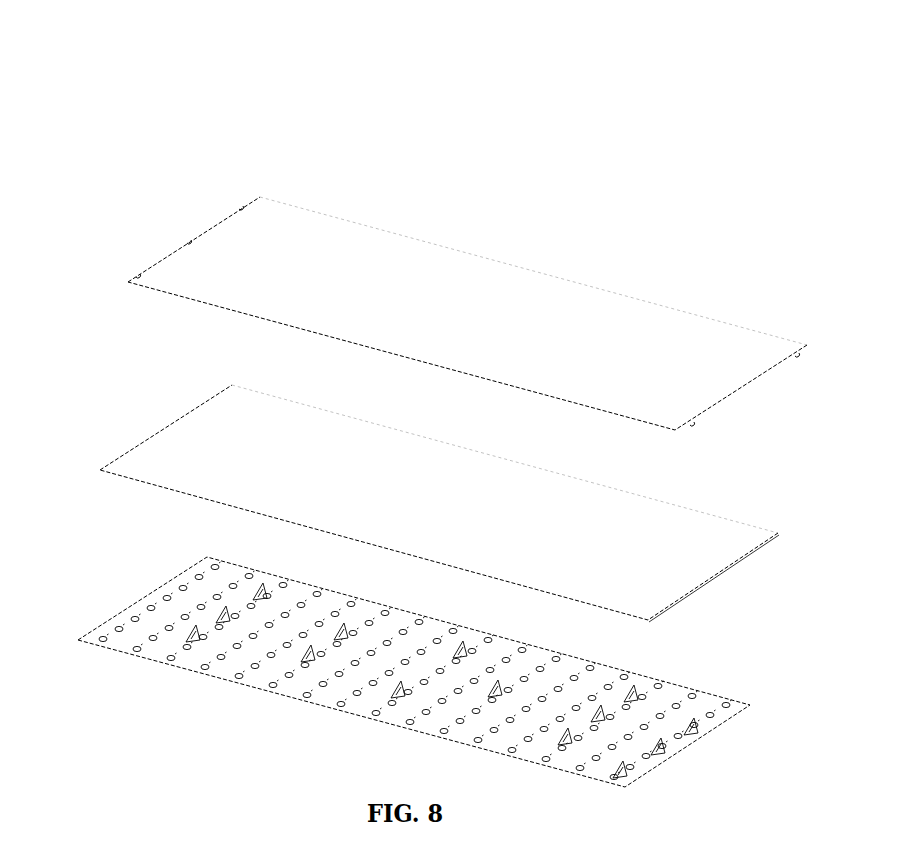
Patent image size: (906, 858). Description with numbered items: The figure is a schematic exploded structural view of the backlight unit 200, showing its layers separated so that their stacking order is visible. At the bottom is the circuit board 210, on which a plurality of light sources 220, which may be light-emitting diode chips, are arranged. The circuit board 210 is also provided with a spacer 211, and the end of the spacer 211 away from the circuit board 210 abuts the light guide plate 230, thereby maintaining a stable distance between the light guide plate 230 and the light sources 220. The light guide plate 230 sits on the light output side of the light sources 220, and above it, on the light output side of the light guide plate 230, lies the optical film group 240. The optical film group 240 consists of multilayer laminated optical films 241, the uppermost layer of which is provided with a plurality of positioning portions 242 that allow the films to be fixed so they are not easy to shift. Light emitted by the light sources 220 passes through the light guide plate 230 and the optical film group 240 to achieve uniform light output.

The backlight unit 200 is at (130, 72).
The circuit board 210 is at (115, 622).
The spacer 211 is at (198, 640).
The light sources 220 is at (168, 597).
The light guide plate 230 is at (168, 433).
The optical film group 240 is at (183, 257).
The optical films 241 is at (223, 228).
The positioning portions 242 is at (743, 388).